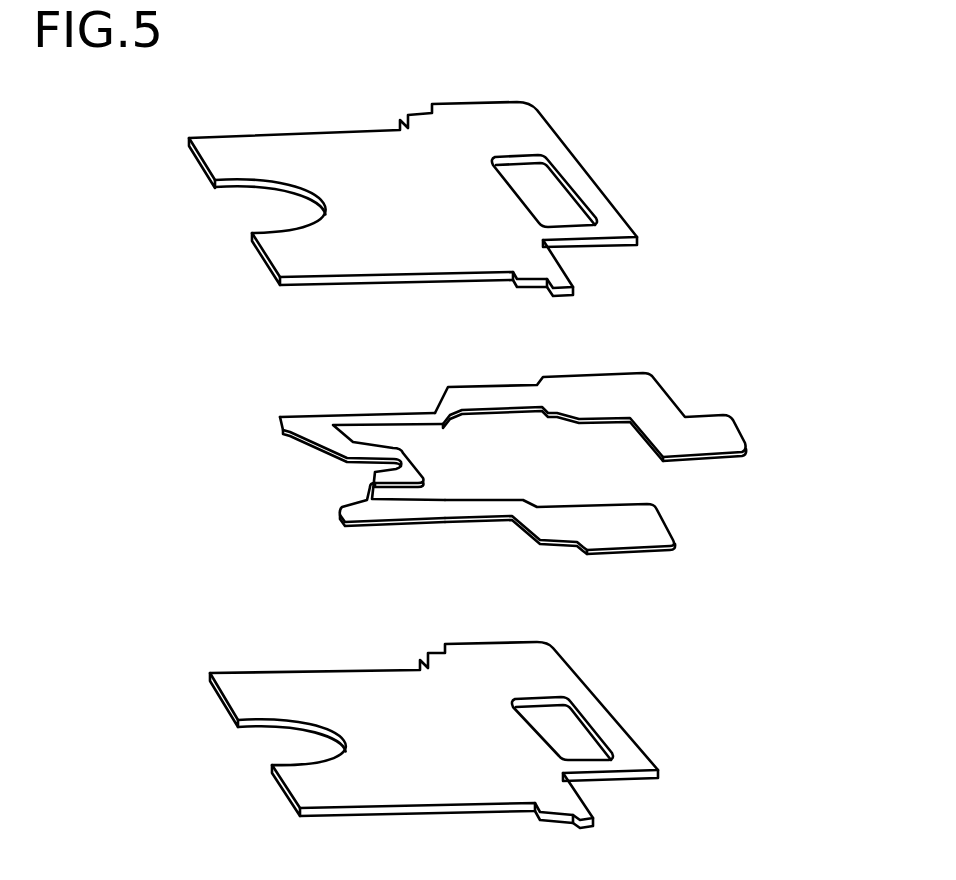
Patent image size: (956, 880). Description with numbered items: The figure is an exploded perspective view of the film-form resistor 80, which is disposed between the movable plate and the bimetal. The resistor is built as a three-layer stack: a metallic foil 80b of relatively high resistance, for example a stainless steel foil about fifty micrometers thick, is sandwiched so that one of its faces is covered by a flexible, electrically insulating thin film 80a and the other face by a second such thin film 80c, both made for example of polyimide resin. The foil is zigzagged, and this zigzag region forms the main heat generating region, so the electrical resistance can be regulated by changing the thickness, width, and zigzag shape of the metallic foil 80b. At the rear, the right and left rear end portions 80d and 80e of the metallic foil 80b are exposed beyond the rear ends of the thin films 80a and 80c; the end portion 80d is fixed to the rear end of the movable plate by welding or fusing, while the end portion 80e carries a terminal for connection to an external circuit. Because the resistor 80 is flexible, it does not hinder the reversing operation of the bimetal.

The film-form resistor 80 is at (552, 106).
The thin film 80a is at (243, 152).
The metallic foil 80b is at (433, 505).
The thin film 80c is at (467, 790).
The rear end portion 80d is at (643, 523).
The rear end portion 80e is at (728, 427).